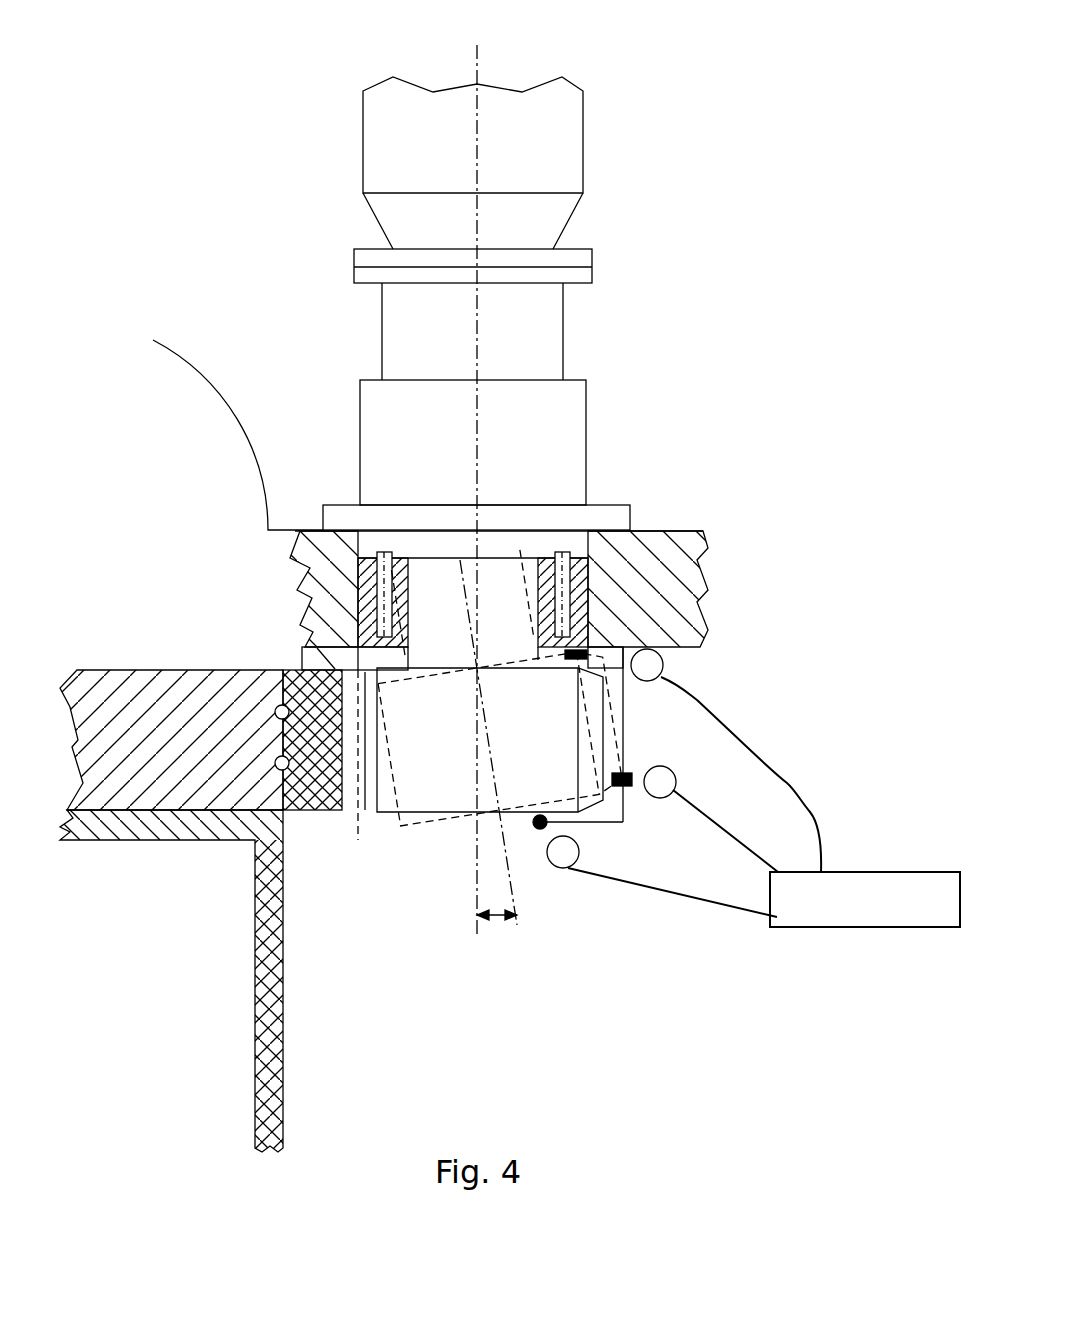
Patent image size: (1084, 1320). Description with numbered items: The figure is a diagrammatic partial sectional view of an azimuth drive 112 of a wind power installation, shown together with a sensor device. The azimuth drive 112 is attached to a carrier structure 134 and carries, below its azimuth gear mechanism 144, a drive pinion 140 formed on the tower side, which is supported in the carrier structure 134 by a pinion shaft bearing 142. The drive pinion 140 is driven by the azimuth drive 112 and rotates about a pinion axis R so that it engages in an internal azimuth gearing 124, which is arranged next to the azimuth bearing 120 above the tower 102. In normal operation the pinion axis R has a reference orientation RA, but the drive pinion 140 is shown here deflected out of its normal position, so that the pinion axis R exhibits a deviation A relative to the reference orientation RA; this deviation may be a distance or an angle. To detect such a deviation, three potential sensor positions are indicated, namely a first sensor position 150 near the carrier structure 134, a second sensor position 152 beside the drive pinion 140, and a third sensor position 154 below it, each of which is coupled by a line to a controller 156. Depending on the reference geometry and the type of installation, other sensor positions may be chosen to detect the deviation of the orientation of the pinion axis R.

The azimuth drive 112 is at (648, 135).
The azimuth gear mechanism 144 is at (543, 427).
The pinion shaft bearing 142 is at (553, 592).
The carrier structure 134 is at (670, 597).
The pinion axis R is at (477, 582).
The azimuth bearing 120 is at (152, 705).
The azimuth gearing 124 is at (352, 695).
The tower 102 is at (268, 1072).
The drive pinion 140 is at (430, 773).
The reference orientation RA is at (477, 796).
The deviation A is at (496, 917).
The first sensor position 150 is at (663, 663).
The second sensor position 152 is at (676, 778).
The third sensor position 154 is at (580, 848).
The controller 156 is at (822, 872).